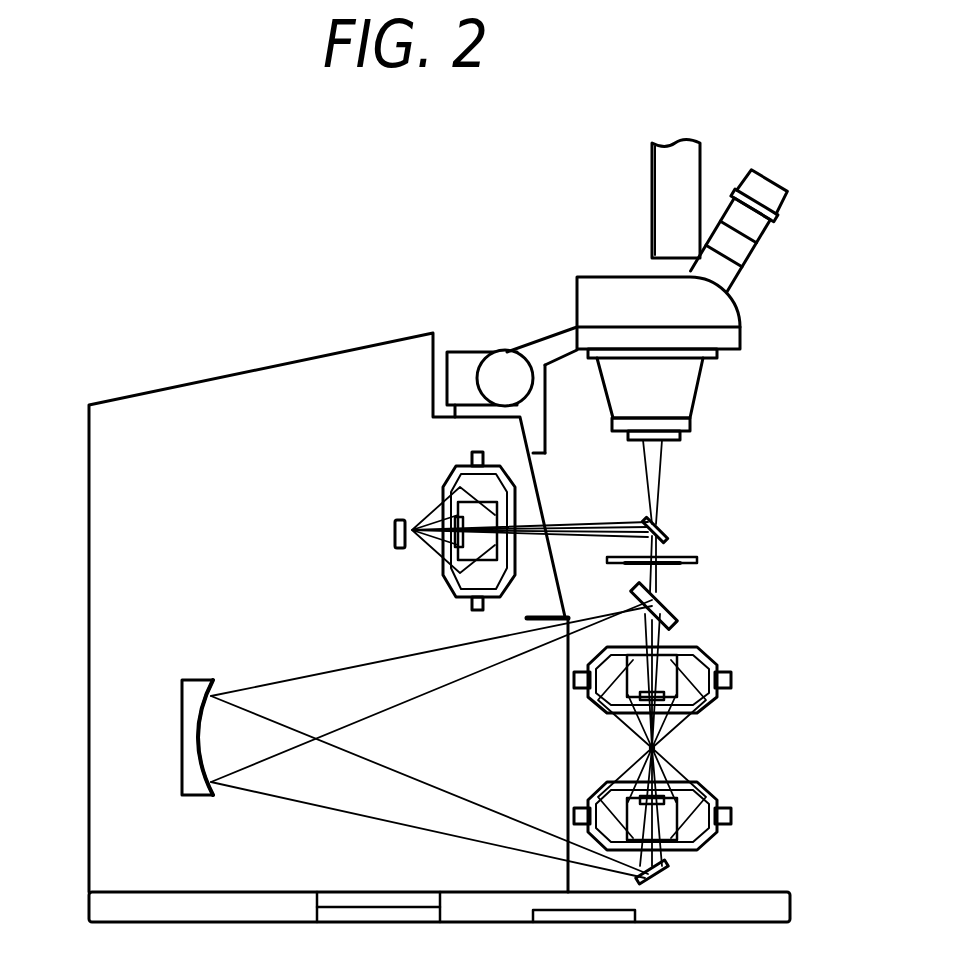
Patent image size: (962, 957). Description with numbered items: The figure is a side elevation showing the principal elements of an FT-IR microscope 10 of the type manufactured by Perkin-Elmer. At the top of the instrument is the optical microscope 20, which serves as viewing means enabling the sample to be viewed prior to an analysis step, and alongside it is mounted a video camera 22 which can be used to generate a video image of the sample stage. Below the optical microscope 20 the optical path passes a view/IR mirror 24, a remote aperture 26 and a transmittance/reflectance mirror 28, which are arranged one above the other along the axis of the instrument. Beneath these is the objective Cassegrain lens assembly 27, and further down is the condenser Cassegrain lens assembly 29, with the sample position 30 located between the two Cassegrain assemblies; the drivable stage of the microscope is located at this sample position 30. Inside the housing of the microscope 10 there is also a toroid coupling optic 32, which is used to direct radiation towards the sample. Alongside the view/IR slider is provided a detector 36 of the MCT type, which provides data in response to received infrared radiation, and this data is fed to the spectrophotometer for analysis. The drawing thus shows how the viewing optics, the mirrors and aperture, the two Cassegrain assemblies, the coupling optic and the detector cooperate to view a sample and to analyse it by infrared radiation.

The microscope 10 is at (48, 592).
The optical microscope 20 is at (678, 378).
The video camera 22 is at (652, 198).
The view/IR mirror 24 is at (668, 532).
The remote aperture 26 is at (697, 560).
The objective Cassegrain lens assembly 27 is at (705, 708).
The transmittance/reflectance mirror 28 is at (676, 614).
The condenser Cassegrain lens assembly 29 is at (700, 842).
The sample position 30 is at (650, 748).
The toroid coupling optic 32 is at (181, 733).
The detector 36 is at (398, 502).